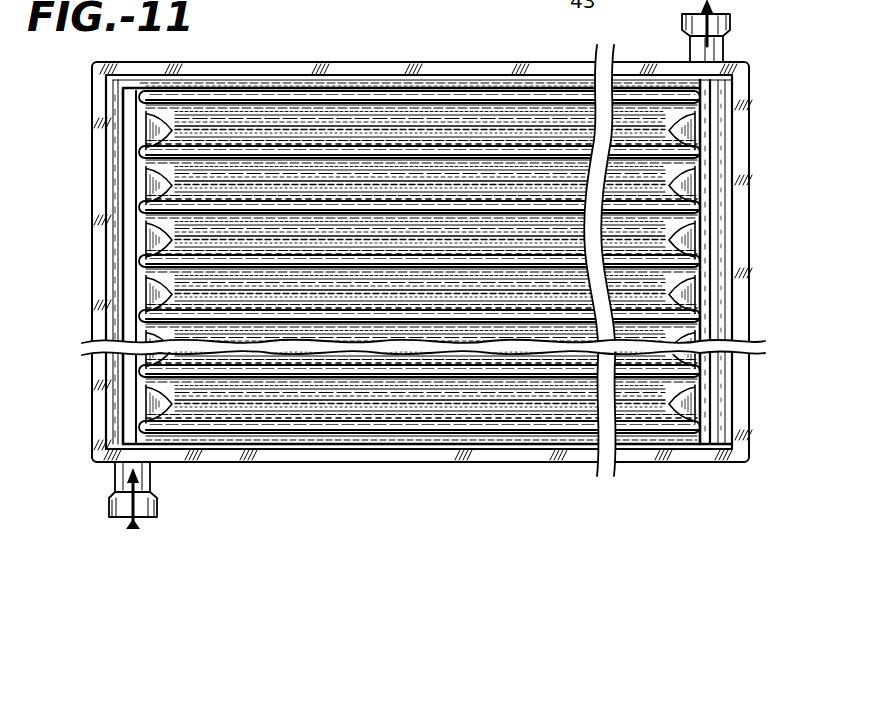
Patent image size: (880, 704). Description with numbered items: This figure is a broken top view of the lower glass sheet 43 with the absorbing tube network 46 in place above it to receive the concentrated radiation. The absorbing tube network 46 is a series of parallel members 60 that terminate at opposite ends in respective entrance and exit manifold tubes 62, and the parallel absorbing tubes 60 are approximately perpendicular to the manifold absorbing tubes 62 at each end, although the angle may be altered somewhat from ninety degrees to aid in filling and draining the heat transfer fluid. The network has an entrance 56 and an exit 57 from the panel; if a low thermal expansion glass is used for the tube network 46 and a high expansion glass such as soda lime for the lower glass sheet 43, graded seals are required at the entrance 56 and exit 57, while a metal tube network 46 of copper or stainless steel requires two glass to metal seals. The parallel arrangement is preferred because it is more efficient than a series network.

The lower glass sheet 43 is at (478, 62).
The absorbing tube network 46 is at (703, 421).
The entrance 56 is at (152, 480).
The exit 57 is at (733, 30).
The parallel absorbing tubes 60 is at (694, 150).
The manifold absorbing tube 62 is at (128, 117).